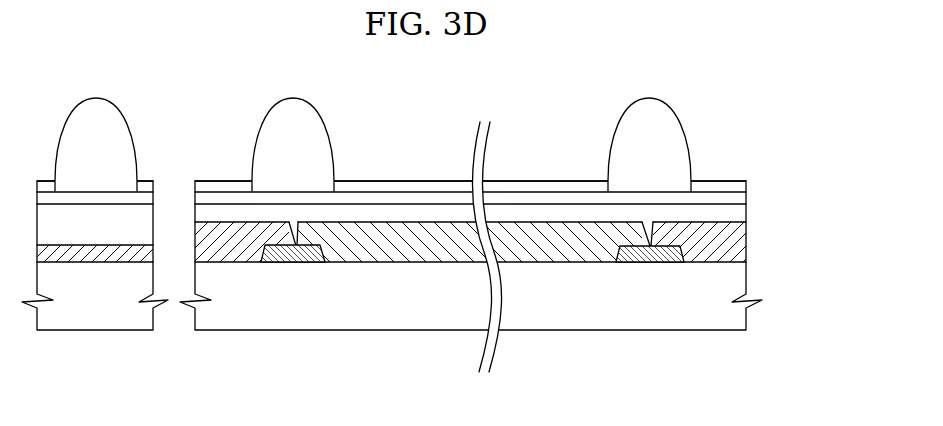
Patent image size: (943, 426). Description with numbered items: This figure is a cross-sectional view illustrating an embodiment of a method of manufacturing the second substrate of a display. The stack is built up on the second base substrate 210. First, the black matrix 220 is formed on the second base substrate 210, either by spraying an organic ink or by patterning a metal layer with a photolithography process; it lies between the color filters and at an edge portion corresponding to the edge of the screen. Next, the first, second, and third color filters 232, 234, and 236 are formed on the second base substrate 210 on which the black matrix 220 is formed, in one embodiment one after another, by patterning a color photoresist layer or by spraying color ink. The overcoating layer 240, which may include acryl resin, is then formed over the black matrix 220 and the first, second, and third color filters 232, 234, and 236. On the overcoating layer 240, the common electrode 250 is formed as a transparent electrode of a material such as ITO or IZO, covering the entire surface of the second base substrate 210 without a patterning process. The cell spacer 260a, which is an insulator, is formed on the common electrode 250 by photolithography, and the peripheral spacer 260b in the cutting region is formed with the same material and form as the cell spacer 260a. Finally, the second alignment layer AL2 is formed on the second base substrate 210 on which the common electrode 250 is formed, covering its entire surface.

The second base substrate 210 is at (737, 281).
The black matrix 220 is at (292, 253).
The first color filter 232 is at (583, 250).
The second color filter 234 is at (232, 249).
The third color filter 236 is at (705, 260).
The overcoating layer 240 is at (737, 215).
The common electrode 250 is at (737, 198).
The second alignment layer AL2 is at (737, 186).
The cell spacer 260a is at (318, 145).
The peripheral spacer 260b is at (120, 145).